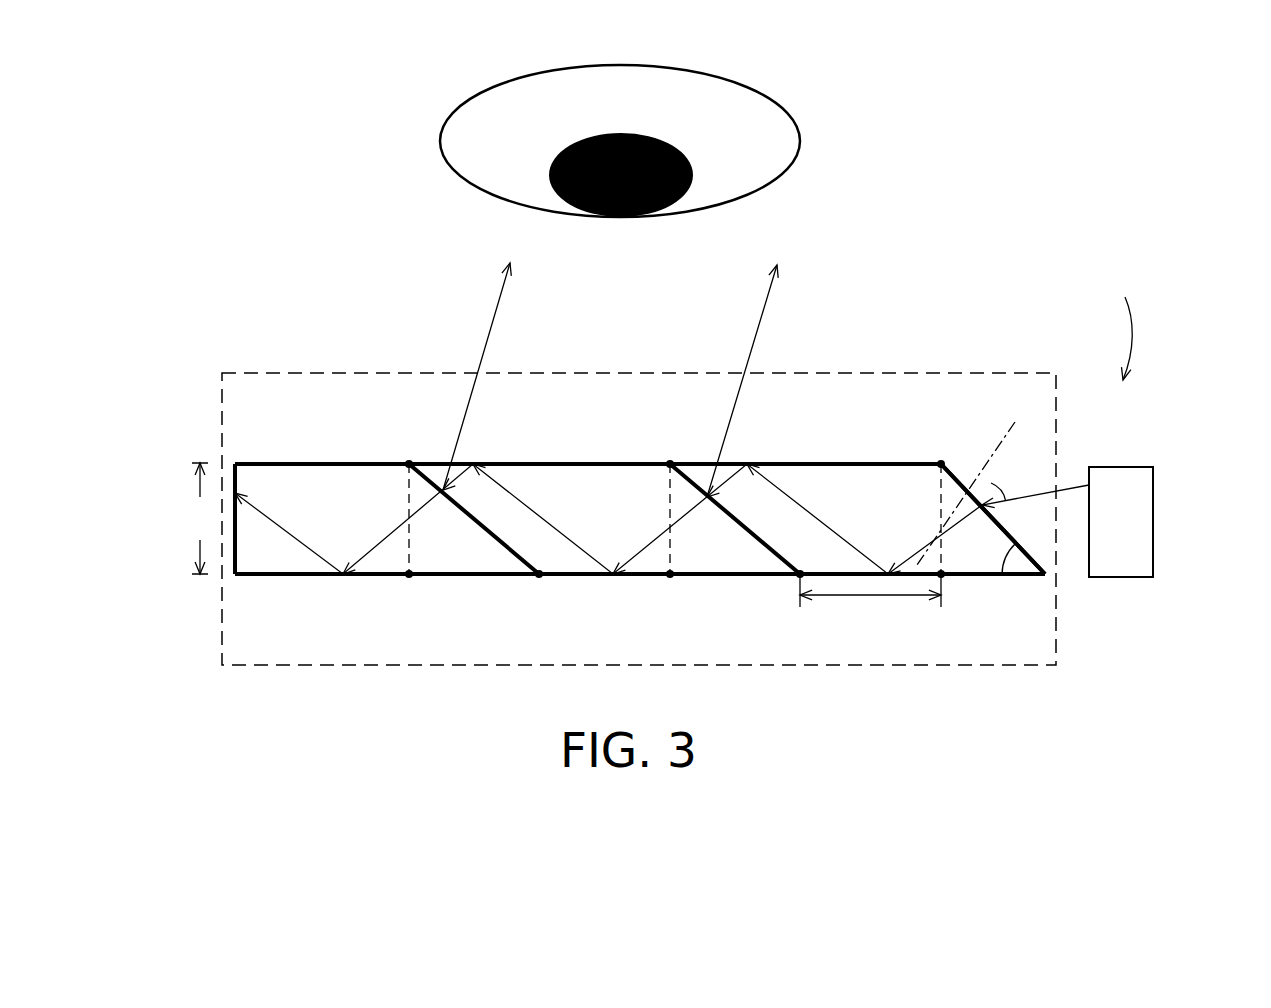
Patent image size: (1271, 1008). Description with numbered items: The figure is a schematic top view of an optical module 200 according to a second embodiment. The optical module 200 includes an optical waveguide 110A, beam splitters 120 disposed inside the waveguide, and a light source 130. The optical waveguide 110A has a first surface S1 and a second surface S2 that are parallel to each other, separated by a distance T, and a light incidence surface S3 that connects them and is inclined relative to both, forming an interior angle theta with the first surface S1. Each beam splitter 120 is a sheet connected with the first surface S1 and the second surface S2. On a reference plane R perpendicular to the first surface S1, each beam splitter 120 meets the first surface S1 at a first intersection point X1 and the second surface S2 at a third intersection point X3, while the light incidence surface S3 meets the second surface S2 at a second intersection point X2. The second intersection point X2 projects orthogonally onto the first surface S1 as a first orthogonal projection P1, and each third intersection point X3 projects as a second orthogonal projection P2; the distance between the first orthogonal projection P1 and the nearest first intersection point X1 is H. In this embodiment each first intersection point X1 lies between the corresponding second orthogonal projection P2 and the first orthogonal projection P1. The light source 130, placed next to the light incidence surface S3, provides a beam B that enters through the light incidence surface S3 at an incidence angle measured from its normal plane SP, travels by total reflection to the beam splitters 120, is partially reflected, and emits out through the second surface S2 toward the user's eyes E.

The optical module 200 is at (1126, 320).
The optical waveguide 110A is at (310, 477).
The beam splitter 120 is at (697, 486).
The light source 130 is at (1145, 487).
The user's eyes E is at (800, 140).
The reference plane R is at (975, 373).
The beam B is at (1040, 497).
The normal plane SP is at (972, 476).
The first surface S1 is at (578, 586).
The second surface S2 is at (568, 452).
The light incidence surface S3 is at (957, 477).
The first intersection point X1 is at (800, 574).
The second intersection point X2 is at (938, 462).
The third intersection point X3 is at (670, 464).
The first orthogonal projection P1 is at (941, 574).
The second orthogonal projection P2 is at (670, 574).
The distance between first surface and second surface T is at (200, 518).
The distance H is at (870, 610).